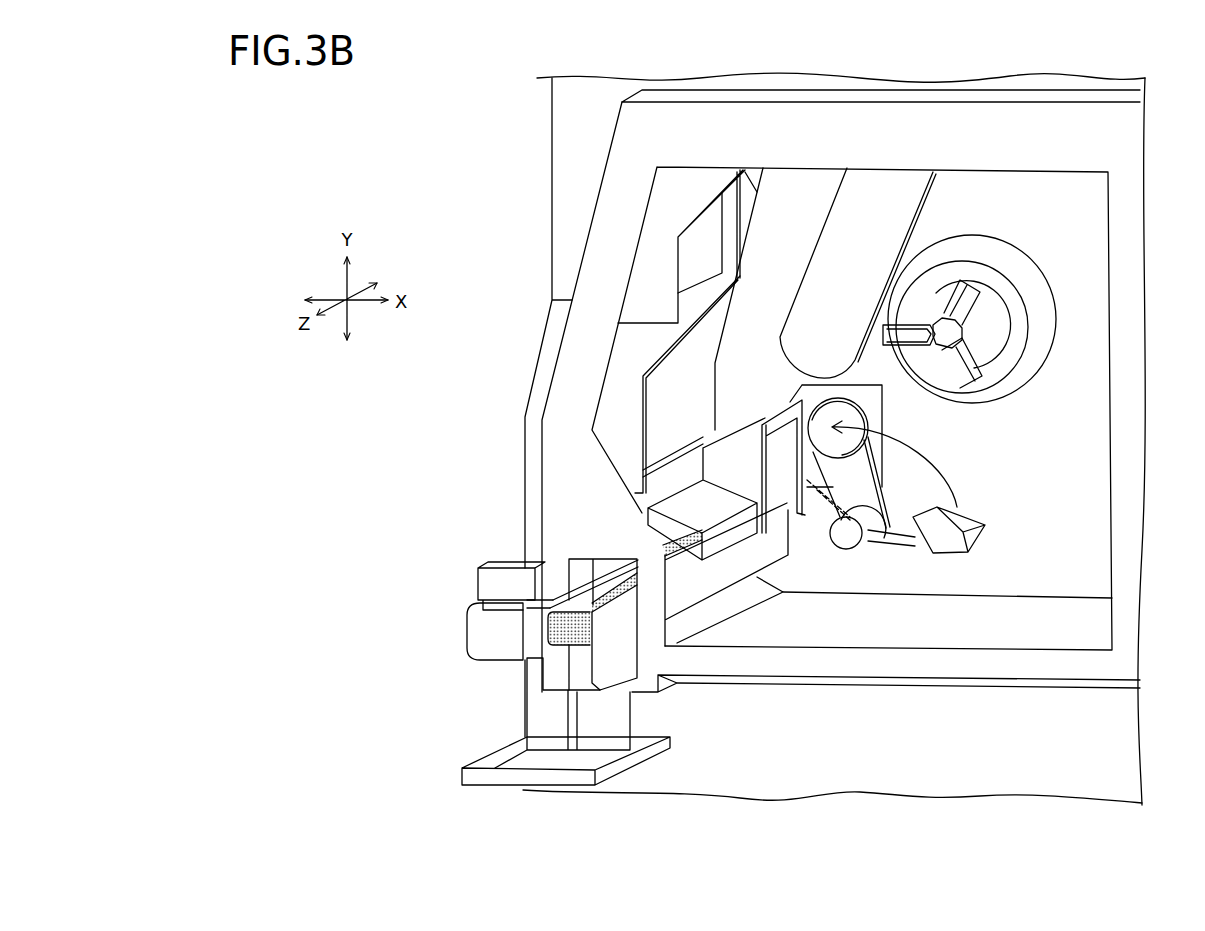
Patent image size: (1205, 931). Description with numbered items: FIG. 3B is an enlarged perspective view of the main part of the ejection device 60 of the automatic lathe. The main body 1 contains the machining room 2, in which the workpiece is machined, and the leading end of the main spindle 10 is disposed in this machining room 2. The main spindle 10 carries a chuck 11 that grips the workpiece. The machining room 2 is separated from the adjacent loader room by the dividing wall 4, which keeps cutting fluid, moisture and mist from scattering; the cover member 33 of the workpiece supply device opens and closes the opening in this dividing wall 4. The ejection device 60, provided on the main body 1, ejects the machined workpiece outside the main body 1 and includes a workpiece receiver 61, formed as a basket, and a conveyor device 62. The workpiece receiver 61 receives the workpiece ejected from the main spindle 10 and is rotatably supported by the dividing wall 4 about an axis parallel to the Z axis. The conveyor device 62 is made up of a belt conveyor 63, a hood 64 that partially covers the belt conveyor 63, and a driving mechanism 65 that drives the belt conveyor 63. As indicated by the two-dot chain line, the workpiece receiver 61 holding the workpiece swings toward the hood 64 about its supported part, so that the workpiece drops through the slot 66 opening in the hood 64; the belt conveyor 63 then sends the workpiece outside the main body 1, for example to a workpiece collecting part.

The main body 1 is at (1058, 92).
The machining room 2 is at (1077, 304).
The dividing wall 4 is at (748, 172).
The main spindle 10 is at (1010, 264).
The chuck 11 is at (987, 337).
The cover member 33 is at (922, 203).
The ejection device 60 is at (681, 717).
The workpiece receiver 61 is at (970, 513).
The conveyor device 62 is at (485, 580).
The belt conveyor 63 is at (575, 648).
The hood 64 is at (640, 512).
The driving mechanism 65 is at (470, 633).
The slot 66 is at (762, 428).